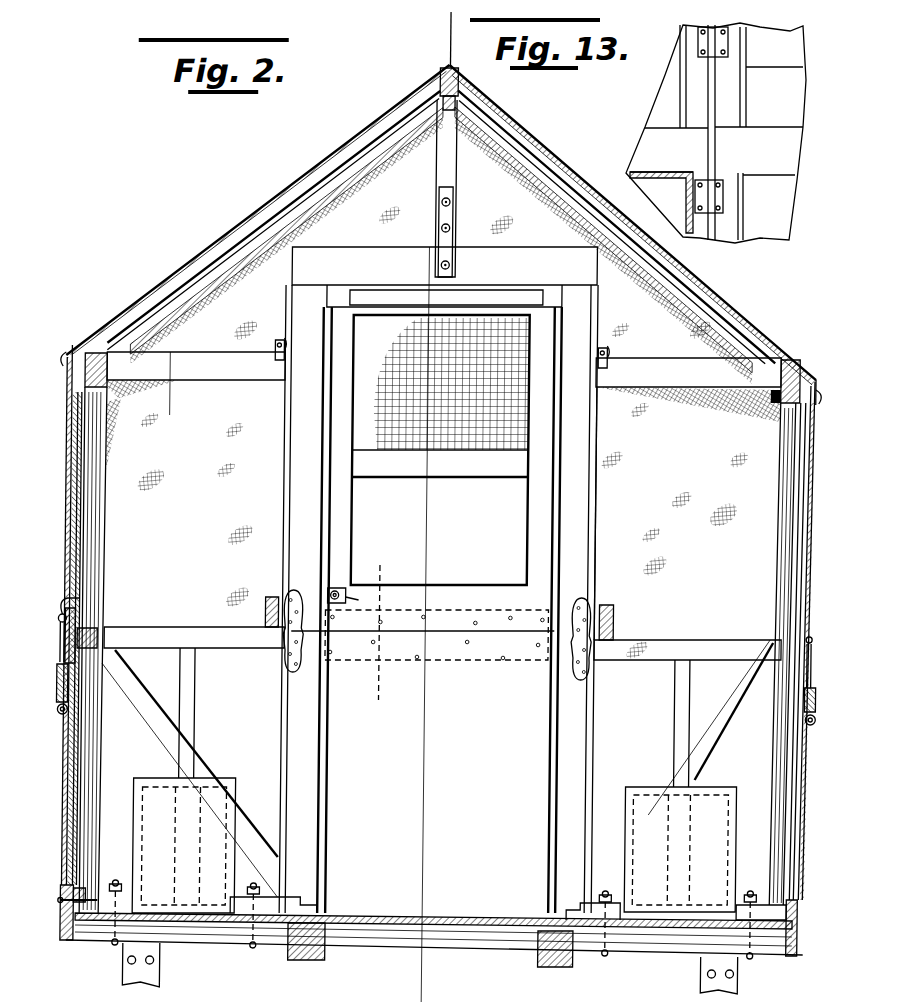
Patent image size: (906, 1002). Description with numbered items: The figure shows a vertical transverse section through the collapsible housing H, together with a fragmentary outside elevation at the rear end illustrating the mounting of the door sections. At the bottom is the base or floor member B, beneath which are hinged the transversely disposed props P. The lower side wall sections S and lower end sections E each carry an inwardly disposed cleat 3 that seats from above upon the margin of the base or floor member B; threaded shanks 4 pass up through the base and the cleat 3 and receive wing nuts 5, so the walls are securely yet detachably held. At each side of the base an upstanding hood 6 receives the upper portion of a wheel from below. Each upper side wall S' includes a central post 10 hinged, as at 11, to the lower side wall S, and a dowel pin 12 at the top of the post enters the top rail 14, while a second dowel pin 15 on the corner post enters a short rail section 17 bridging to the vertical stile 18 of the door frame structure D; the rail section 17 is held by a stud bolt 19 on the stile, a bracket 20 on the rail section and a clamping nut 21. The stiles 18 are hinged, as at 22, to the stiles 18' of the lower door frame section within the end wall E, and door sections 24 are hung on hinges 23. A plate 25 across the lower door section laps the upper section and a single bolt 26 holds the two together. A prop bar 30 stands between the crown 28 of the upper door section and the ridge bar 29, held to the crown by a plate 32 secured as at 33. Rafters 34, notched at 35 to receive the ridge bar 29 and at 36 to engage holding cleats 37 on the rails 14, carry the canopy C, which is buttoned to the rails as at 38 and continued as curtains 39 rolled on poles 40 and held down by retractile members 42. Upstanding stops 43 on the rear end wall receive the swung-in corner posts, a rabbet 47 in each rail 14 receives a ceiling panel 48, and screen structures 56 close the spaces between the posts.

In FIG. 2, the cleat 3 is at (447, 30).
In FIG. 2, the threaded shank 4 is at (84, 944).
In FIG. 2, the wing nut 5 is at (270, 890).
In FIG. 2, the hood 6 is at (238, 778).
In FIG. 2, the central post 10 is at (98, 473).
In FIG. 2, the hinge connection 11 is at (128, 654).
In FIG. 2, the dowel pin 12 is at (398, 573).
In FIG. 2, the top rail 14 is at (84, 378).
In FIG. 2, the second dowel pin 15 is at (185, 328).
In FIG. 2, the short rail section 17 is at (678, 360).
In FIG. 2, the vertical stile 18 is at (613, 513).
In FIG. 2, the stile of lower door frame section 18' is at (439, 584).
In FIG. 2, the stud bolt 19 is at (605, 350).
In FIG. 2, the bracket 20 is at (275, 352).
In FIG. 2, the clamping nut 21 is at (284, 346).
In FIG. 2, the hinge connection 22 is at (288, 595).
In FIG. 13, the hinge 23 is at (729, 55).
In FIG. 2, the door section 24 is at (333, 514).
In FIG. 13, the door section 24 is at (797, 54).
In FIG. 2, the plate 25 is at (512, 672).
In FIG. 2, the bolt 26 is at (378, 632).
In FIG. 2, the crown 28 is at (357, 258).
In FIG. 2, the ridge bar 29 is at (437, 78).
In FIG. 2, the prop bar 30 is at (452, 160).
In FIG. 2, the plate 32 is at (437, 250).
In FIG. 2, the detachable securing means 33 is at (449, 204).
In FIG. 2, the rafter 34 is at (307, 187).
In FIG. 2, the notch 35 is at (440, 96).
In FIG. 2, the notch 36 is at (127, 310).
In FIG. 2, the holding cleat 37 is at (97, 348).
In FIG. 2, the button connection 38 is at (66, 352).
In FIG. 2, the curtain 39 is at (70, 510).
In FIG. 2, the pole 40 is at (80, 596).
In FIG. 2, the retractile member 42 is at (66, 695).
In FIG. 2, the stop 43 is at (268, 610).
In FIG. 2, the rabbet 47 is at (104, 393).
In FIG. 2, the ceiling panel 48 is at (217, 293).
In FIG. 2, the screen structure 56 is at (100, 552).
In FIG. 2, the base or floor member B is at (512, 930).
In FIG. 2, the canopy C is at (610, 168).
In FIG. 2, the door frame structure D is at (521, 269).
In FIG. 2, the lower end section E is at (240, 702).
In FIG. 13, the lower end section E is at (666, 85).
In FIG. 2, the housing H is at (788, 289).
In FIG. 2, the prop P is at (161, 968).
In FIG. 2, the lower side wall section S is at (419, 712).
In FIG. 2, the upper side wall S' is at (441, 580).